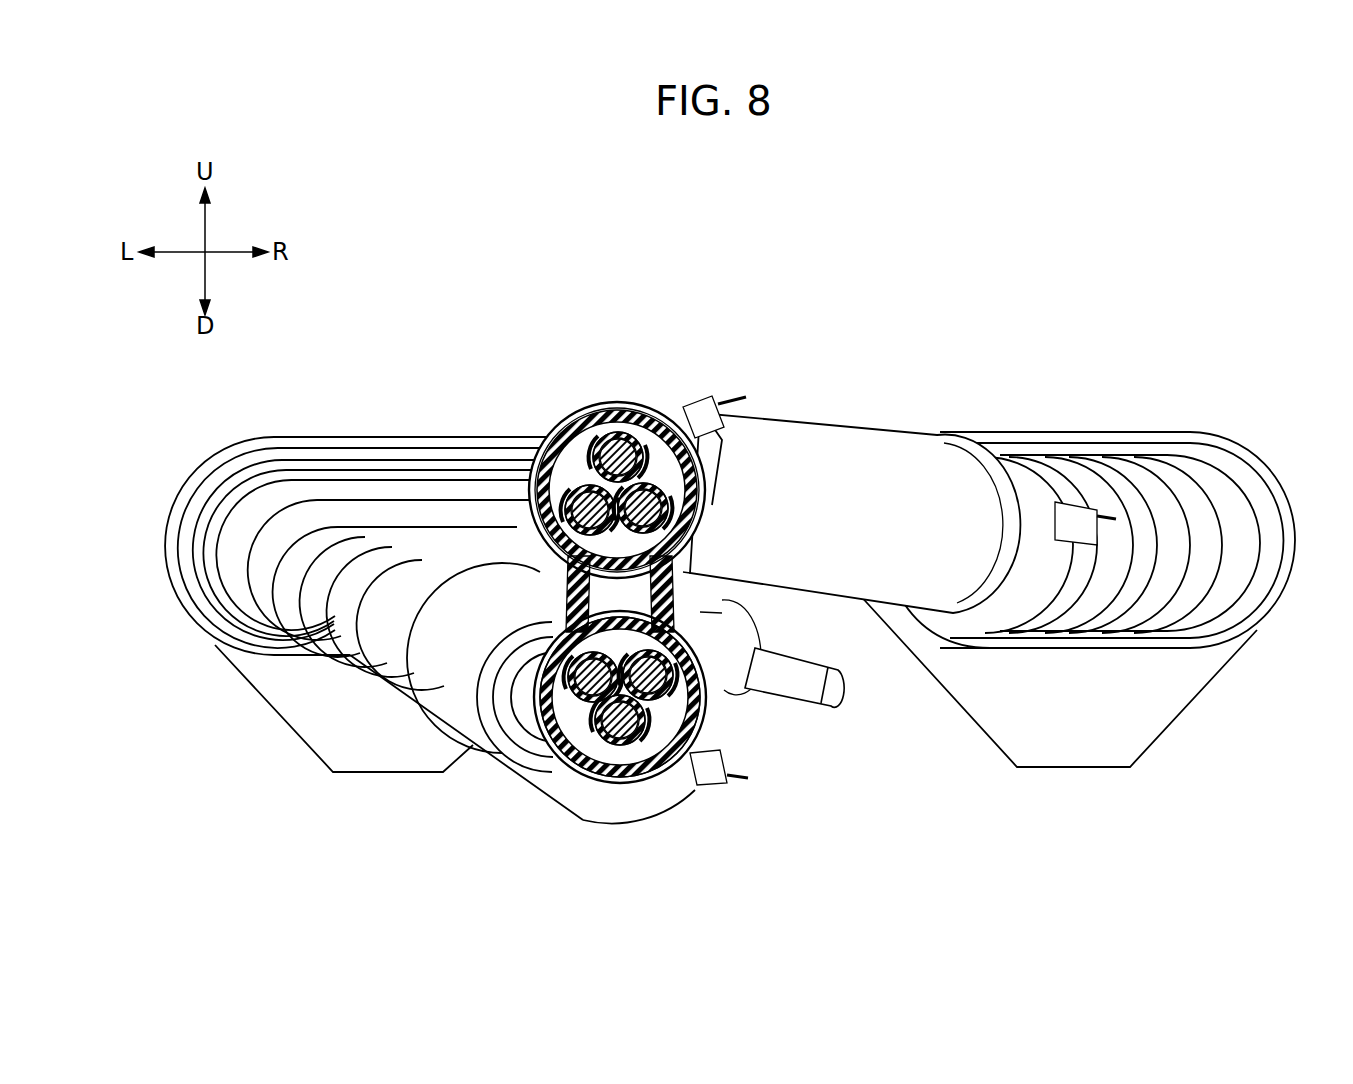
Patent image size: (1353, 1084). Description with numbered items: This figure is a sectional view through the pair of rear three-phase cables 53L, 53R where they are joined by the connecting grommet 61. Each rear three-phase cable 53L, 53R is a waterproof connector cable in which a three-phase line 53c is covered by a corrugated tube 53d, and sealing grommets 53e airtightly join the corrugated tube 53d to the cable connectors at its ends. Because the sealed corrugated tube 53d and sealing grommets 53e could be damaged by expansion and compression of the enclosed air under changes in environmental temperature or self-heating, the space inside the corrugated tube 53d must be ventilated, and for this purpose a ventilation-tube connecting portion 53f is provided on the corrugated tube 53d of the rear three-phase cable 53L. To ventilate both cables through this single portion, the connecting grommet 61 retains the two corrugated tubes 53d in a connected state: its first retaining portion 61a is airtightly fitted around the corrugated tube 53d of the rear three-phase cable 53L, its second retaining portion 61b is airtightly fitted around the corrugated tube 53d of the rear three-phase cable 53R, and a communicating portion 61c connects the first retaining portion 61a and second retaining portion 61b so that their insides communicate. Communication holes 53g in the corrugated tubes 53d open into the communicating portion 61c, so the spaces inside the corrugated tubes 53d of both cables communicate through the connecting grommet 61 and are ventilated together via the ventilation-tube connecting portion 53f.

The sealing grommet 53e is at (325, 500).
The rear three-phase cable 53L is at (442, 695).
The rear three-phase cable 53R is at (862, 448).
The ventilation-tube connecting portion 53f is at (830, 705).
The communication hole 53g is at (683, 572).
The corrugated tube 53d is at (585, 440).
The three-phase line 53c is at (613, 427).
The connecting grommet 61 is at (607, 586).
The first retaining portion 61a is at (675, 762).
The second retaining portion 61b is at (635, 413).
The communicating portion 61c is at (567, 590).